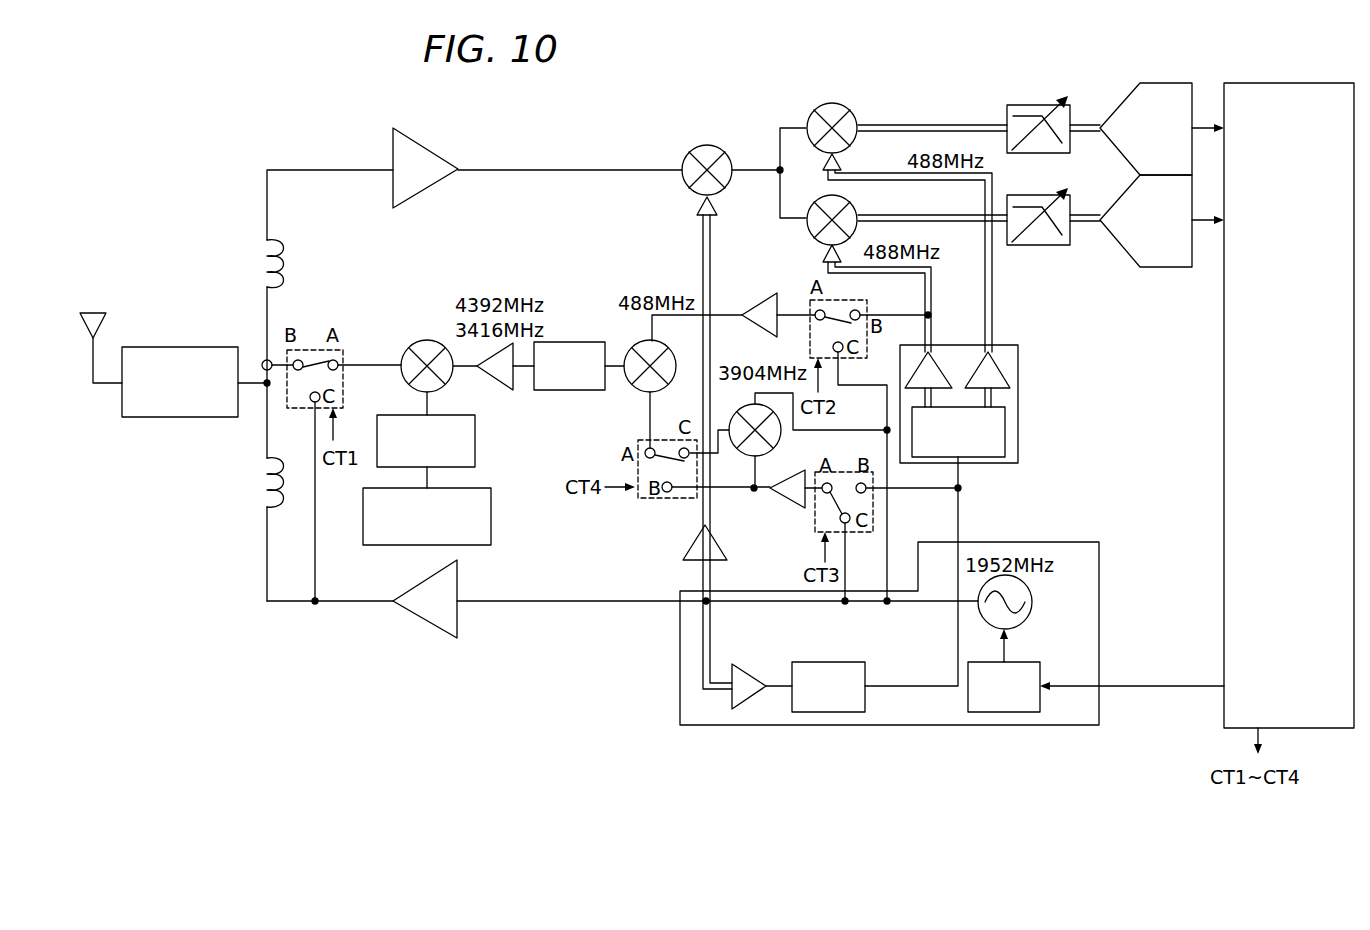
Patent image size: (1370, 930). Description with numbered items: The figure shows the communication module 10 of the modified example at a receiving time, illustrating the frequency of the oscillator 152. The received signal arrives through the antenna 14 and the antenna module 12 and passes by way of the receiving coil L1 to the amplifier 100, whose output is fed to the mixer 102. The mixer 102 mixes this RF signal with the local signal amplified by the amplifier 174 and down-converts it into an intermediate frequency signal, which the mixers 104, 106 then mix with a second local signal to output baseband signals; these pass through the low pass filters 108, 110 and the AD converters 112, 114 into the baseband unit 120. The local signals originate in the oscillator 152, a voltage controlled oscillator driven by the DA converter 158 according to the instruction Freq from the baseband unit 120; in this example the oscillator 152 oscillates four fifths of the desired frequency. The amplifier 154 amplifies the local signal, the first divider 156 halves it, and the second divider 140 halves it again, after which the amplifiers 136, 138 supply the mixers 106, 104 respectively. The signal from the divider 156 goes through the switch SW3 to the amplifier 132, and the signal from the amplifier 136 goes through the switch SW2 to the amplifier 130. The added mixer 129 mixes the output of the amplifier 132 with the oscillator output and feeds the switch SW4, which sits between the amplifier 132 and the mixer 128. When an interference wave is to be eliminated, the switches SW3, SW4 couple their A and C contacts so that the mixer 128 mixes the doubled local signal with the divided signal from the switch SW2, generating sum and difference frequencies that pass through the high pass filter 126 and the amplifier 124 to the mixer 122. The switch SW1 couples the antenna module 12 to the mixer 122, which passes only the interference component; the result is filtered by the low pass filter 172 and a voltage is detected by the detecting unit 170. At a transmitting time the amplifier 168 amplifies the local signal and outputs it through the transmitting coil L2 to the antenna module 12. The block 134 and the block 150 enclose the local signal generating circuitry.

The communication module 10 is at (966, 78).
The antenna module 12 is at (192, 347).
The antenna 14 is at (101, 312).
The receiving coil L1 is at (255, 255).
The transmitting coil L2 is at (255, 487).
The switch SW1 is at (318, 349).
The switch SW2 is at (810, 300).
The switch SW3 is at (873, 505).
The switch SW4 is at (643, 436).
The amplifier 100 is at (432, 200).
The mixer 102 is at (714, 142).
The mixer 104 is at (834, 102).
The mixer 106 is at (857, 201).
The low pass filter 108 is at (1034, 104).
The low pass filter 110 is at (1044, 258).
The AD converter 112 is at (1158, 82).
The AD converter 114 is at (1162, 256).
The baseband unit 120 is at (1223, 428).
The mixer 122 is at (427, 340).
The amplifier 124 is at (500, 389).
The high pass filter 126 is at (582, 342).
The mixer 128 is at (626, 388).
The mixer 129 is at (734, 456).
The amplifier 130 is at (756, 308).
The amplifier 132 is at (783, 508).
The quadrature signal generator 134 is at (1018, 374).
The amplifier 136 is at (941, 370).
The amplifier 138 is at (1001, 370).
The 2 divider 140 is at (1005, 432).
The local oscillator unit 150 is at (1099, 547).
The oscillator 152 is at (1032, 596).
The amplifier 154 is at (754, 670).
The 2 divider 156 is at (842, 662).
The DA converter 158 is at (1034, 662).
The amplifier 168 is at (431, 638).
The detecting unit 170 is at (491, 522).
The low pass filter 172 is at (475, 448).
The amplifier 174 is at (683, 543).